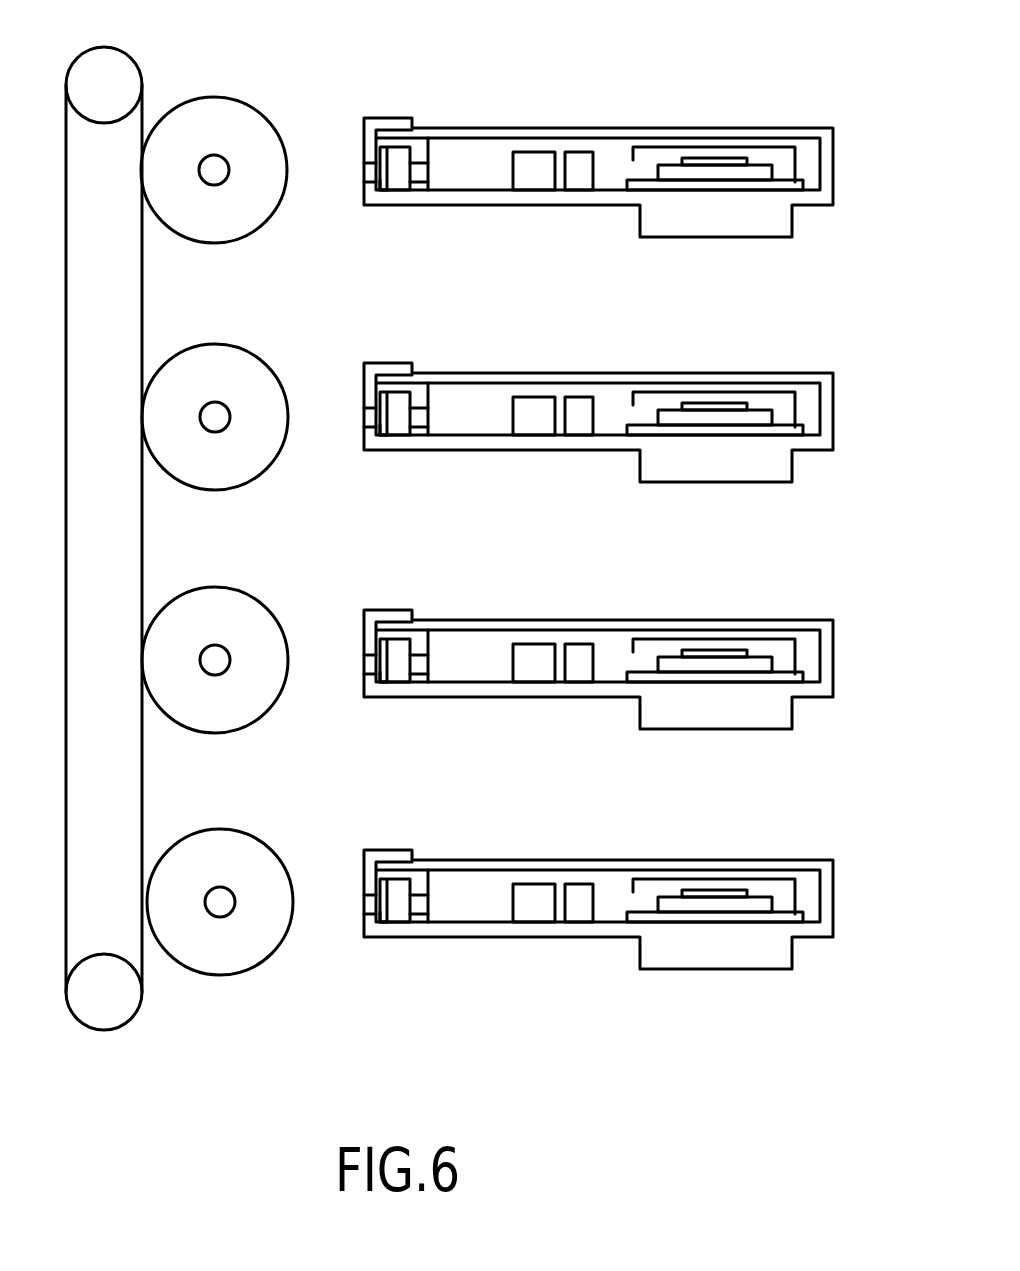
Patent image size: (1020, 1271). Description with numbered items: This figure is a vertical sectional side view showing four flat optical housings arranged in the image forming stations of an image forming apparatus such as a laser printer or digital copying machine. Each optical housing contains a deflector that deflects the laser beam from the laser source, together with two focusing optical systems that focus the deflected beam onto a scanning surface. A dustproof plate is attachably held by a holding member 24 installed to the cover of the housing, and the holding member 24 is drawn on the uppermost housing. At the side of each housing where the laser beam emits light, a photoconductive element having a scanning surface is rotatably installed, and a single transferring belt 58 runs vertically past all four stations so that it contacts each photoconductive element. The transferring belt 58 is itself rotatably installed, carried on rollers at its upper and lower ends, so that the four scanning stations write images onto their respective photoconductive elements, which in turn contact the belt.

The holding member 24 is at (388, 120).
The transferring belt 58 is at (143, 322).